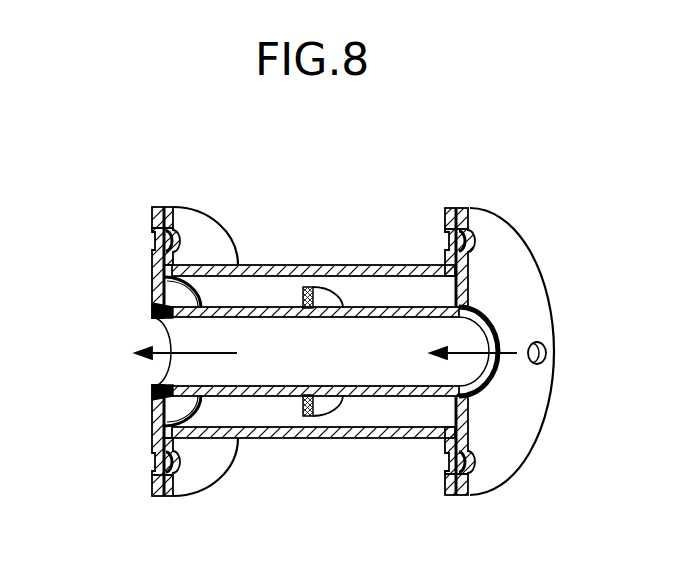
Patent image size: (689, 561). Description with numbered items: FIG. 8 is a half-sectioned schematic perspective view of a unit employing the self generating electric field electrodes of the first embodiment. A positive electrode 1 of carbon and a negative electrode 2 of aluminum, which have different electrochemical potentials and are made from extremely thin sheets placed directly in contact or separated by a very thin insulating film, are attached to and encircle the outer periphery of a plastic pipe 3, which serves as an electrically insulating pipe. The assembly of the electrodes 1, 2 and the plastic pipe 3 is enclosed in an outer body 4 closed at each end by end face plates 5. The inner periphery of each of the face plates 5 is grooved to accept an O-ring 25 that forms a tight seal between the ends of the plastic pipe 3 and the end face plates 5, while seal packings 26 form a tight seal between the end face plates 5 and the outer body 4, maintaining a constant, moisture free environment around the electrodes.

The positive electrode 1 is at (297, 295).
The negative electrode 2 is at (318, 296).
The plastic pipe 3 is at (365, 396).
The outer body 4 is at (412, 265).
The end face plates 5 is at (153, 418).
The O-ring 25 is at (153, 296).
The seal packings 26 is at (163, 210).